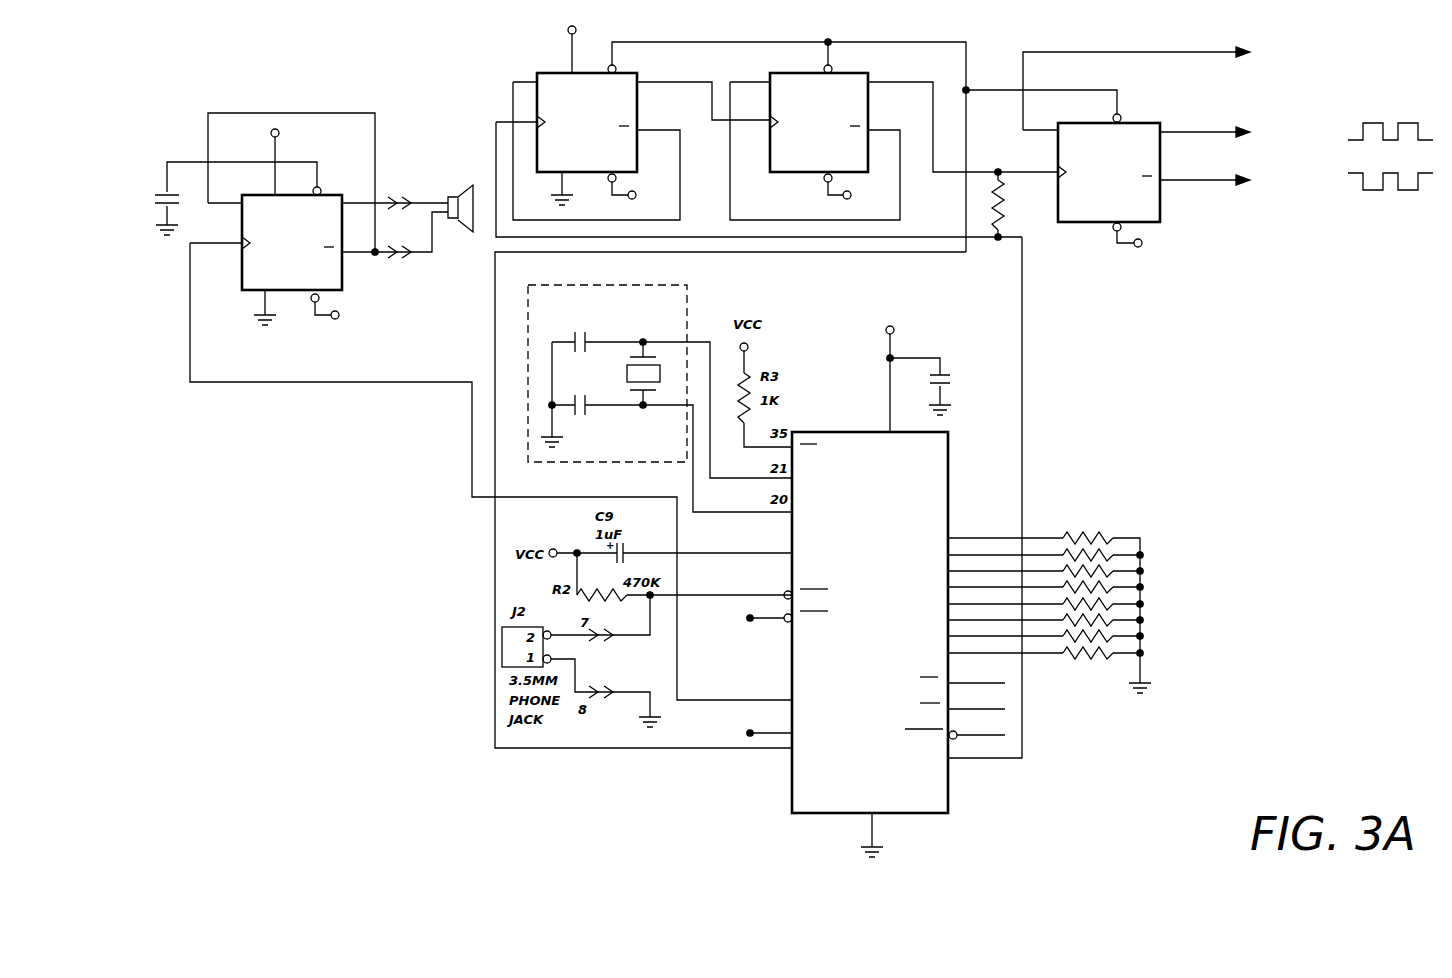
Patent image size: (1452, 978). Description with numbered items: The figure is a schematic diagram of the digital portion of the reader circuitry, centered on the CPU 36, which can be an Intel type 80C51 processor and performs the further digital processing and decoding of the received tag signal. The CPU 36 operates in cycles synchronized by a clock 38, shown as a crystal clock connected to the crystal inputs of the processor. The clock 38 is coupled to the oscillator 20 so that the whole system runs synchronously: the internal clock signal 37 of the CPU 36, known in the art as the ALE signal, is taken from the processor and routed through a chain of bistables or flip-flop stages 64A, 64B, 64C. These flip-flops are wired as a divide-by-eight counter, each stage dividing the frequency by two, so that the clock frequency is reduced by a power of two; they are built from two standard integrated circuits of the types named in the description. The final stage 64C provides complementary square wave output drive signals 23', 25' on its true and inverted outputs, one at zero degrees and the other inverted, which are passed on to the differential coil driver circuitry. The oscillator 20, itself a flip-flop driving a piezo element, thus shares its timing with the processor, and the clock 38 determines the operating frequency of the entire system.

The oscillator 20 is at (455, 90).
The complementary square wave output drive signal 23' is at (1390, 117).
The complementary square wave output drive signal 25' is at (1390, 198).
The CPU 36 is at (880, 503).
The internal clock signal 37 is at (997, 758).
The clock 38 is at (697, 306).
The flip-flop stage 64A is at (640, 118).
The flip-flop stage 64B is at (870, 118).
The flip-flop stage 64C is at (1075, 222).